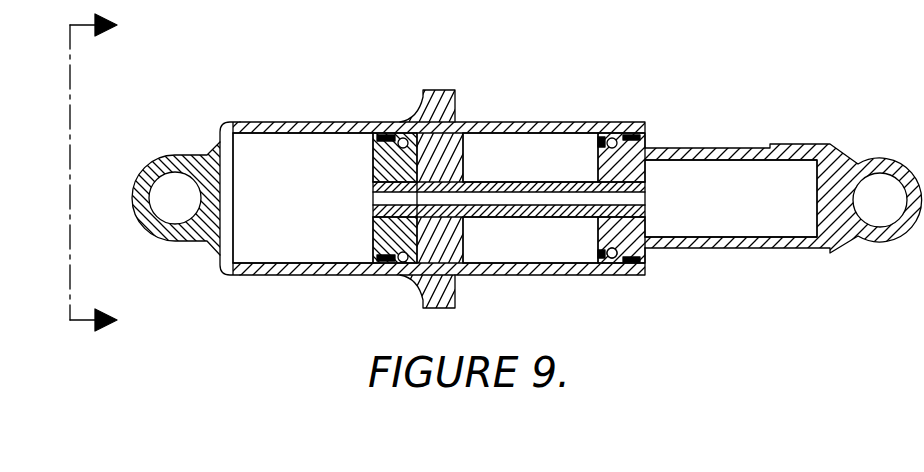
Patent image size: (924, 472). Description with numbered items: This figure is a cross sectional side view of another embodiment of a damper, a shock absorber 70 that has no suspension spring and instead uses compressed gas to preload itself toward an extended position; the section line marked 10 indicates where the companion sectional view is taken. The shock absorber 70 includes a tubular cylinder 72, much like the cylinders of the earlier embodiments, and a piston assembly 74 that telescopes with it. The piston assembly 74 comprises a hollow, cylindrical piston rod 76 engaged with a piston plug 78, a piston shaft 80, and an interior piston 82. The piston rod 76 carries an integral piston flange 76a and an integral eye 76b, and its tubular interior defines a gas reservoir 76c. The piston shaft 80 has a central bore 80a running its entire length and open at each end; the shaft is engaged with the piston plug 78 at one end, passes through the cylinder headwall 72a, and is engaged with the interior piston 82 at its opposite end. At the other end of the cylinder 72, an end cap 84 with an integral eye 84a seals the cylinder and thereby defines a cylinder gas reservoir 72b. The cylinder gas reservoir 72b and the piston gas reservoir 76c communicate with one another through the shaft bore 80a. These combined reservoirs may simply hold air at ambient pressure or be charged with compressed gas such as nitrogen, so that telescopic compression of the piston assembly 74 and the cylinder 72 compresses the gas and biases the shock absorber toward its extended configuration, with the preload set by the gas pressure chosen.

The section line 10- 10 is at (72, 167).
The shock absorber 70 is at (355, 97).
The tubular cylinder 72 is at (300, 121).
The cylinder headwall 72a is at (465, 230).
The gas reservoir 72b is at (312, 212).
The piston assembly 74 is at (709, 122).
The piston rod 76 is at (753, 147).
The piston flange 76a is at (596, 250).
The eye 76b is at (880, 187).
The interior gas reservoir 76c is at (753, 211).
The piston plug 78 is at (650, 158).
The piston shaft 80 is at (533, 178).
The central bore 80a is at (489, 198).
The interior piston 82 is at (372, 232).
The end cap 84 is at (173, 241).
The eye 84a is at (172, 185).